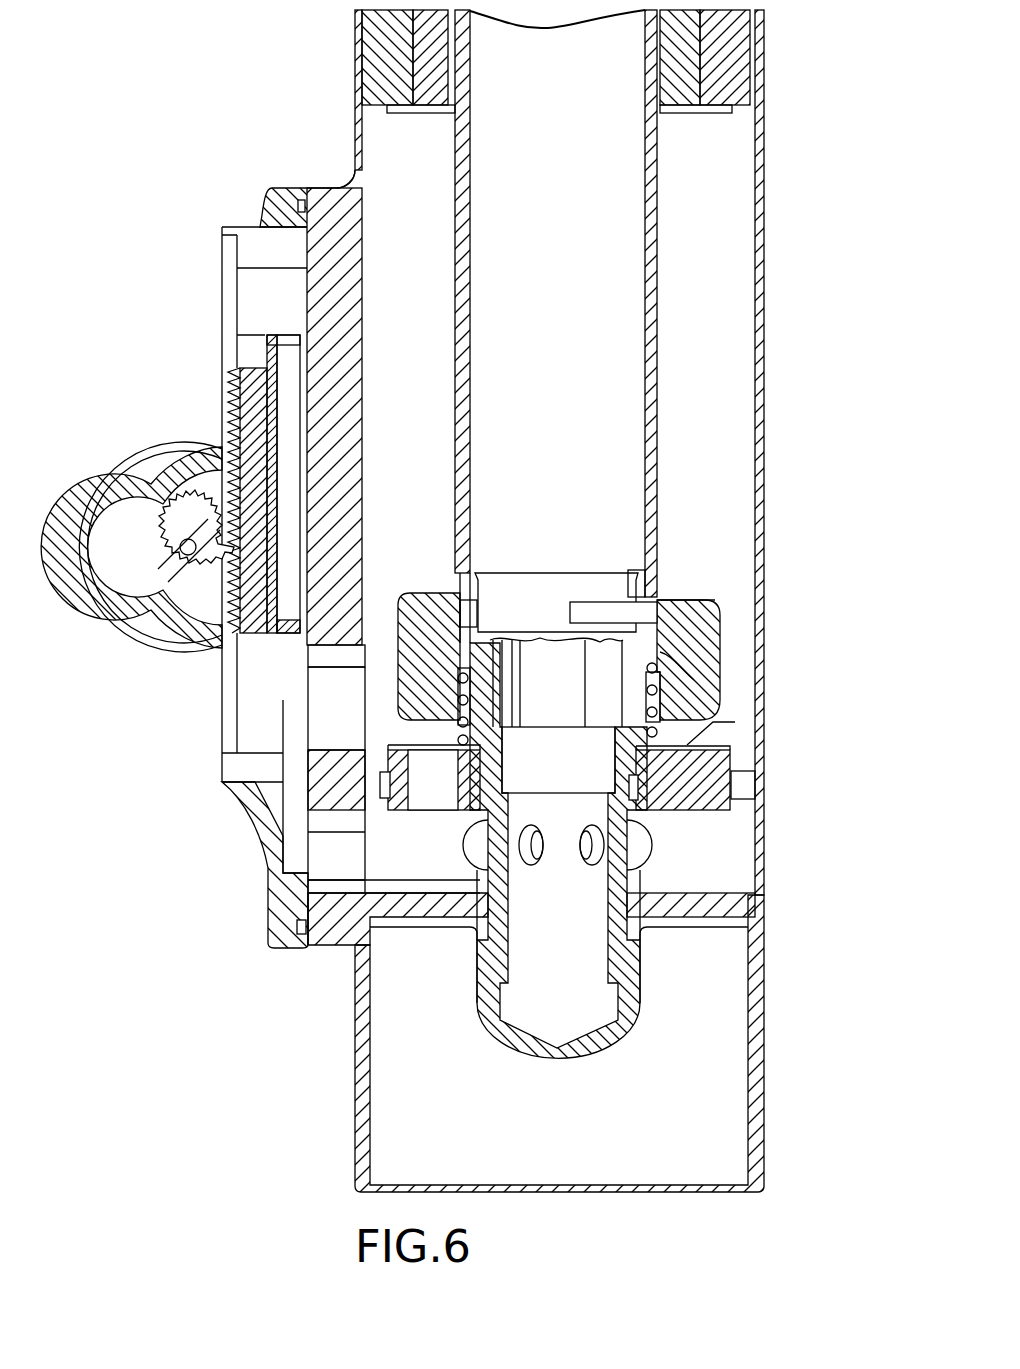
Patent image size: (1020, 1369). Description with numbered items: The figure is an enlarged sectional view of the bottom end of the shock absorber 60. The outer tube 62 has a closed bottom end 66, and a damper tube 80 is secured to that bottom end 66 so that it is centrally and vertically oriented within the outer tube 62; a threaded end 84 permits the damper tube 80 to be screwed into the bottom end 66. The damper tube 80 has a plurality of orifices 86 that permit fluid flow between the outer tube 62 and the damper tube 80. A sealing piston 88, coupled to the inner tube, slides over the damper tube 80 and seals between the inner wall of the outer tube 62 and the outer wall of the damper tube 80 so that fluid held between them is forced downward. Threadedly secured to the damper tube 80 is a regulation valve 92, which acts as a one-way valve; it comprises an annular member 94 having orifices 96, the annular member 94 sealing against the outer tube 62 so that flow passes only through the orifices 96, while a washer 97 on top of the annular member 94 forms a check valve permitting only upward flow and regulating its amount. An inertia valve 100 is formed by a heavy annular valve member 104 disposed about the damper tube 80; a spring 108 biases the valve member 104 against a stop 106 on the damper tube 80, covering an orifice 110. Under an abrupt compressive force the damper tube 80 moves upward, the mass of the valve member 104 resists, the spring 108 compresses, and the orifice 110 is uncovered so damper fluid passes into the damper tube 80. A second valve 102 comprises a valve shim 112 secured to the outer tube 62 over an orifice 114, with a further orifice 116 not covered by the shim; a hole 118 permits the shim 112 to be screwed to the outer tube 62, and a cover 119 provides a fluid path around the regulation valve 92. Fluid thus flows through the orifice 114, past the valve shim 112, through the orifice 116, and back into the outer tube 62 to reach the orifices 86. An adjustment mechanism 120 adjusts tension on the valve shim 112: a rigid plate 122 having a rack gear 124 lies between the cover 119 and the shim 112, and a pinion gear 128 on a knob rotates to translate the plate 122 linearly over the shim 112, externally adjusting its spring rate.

The shock absorber 60 is at (796, 280).
The outer tube 62 is at (766, 392).
The closed bottom end 66 is at (690, 905).
The damper tube 80 is at (660, 440).
The threaded end 84 is at (496, 962).
The orifices 86 is at (520, 848).
The sealing piston 88 is at (686, 108).
The regulation valve 92 is at (716, 757).
The annular member 94 is at (708, 810).
The orifices 96 is at (430, 762).
The washer 97 is at (720, 722).
The inertia valve 100 is at (712, 630).
The valve 102 is at (272, 710).
The annular valve member 104 is at (690, 598).
The stop 106 is at (680, 665).
The spring 108 is at (660, 685).
The orifice 110 is at (612, 600).
The valve shim 112 is at (305, 682).
The orifice 114 is at (366, 672).
The orifice 116 is at (348, 858).
The hole 118 is at (332, 478).
The cover 119 is at (282, 200).
The adjustment mechanism 120 is at (148, 434).
The rigid plate 122 is at (270, 438).
The rack gear 124 is at (230, 386).
The pinion gear 128 is at (150, 560).